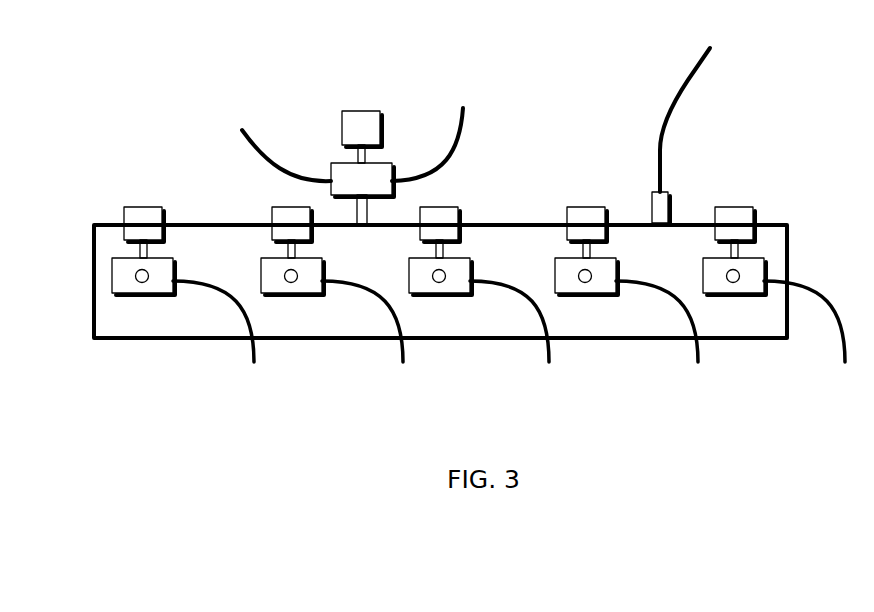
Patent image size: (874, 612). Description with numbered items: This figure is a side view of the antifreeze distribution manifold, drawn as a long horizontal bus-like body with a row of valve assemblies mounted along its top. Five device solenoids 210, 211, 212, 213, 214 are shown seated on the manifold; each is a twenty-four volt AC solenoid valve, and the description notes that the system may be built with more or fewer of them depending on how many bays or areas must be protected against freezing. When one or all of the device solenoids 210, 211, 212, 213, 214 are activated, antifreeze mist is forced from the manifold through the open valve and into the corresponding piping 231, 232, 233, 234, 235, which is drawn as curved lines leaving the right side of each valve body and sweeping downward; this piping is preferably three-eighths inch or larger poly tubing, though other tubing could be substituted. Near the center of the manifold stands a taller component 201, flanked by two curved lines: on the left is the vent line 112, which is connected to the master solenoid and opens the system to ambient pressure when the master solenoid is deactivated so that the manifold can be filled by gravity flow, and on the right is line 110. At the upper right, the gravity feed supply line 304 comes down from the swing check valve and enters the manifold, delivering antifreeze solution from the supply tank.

The optical fiber 110 is at (464, 130).
The vent line 112 is at (260, 135).
The controller module 201 is at (372, 110).
The device solenoid 210 is at (136, 208).
The device solenoid 211 is at (270, 208).
The device solenoid 212 is at (461, 208).
The device solenoid 213 is at (588, 207).
The device solenoid 214 is at (742, 207).
The piping 231 is at (254, 358).
The piping 232 is at (403, 358).
The piping 233 is at (549, 358).
The piping 234 is at (698, 358).
The piping 235 is at (843, 358).
The gravity feed supply line 304 is at (673, 105).